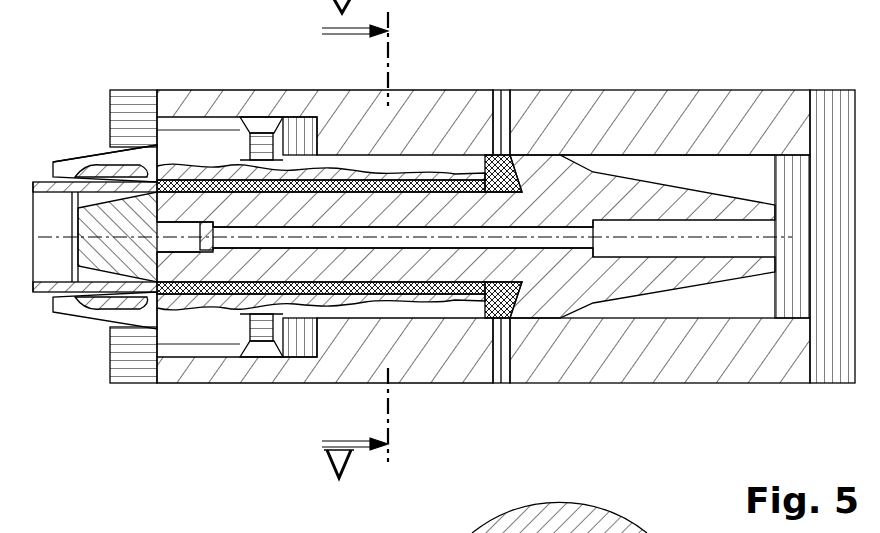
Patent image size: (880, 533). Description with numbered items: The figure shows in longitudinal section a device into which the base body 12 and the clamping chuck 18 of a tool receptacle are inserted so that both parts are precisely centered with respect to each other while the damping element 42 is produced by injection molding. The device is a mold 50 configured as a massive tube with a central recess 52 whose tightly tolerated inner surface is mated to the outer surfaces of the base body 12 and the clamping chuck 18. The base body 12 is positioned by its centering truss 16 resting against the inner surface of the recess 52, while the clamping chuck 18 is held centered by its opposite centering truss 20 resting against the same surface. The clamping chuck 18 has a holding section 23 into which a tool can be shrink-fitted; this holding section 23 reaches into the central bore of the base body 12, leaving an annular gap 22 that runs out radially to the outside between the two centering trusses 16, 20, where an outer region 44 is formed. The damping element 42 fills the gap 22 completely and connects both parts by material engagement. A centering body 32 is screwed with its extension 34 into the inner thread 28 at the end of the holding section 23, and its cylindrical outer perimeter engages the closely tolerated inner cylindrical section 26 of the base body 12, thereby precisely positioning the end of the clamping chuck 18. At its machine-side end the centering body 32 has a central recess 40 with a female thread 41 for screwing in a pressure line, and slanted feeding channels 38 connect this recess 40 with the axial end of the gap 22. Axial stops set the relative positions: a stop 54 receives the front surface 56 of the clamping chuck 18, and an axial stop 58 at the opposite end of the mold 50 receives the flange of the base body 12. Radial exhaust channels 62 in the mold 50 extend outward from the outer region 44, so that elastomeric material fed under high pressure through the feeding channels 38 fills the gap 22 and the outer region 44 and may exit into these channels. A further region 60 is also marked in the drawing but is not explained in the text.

The base body 12 is at (130, 375).
The centering truss 16 is at (438, 150).
The clamping chuck 18 is at (641, 300).
The centering truss 20 is at (556, 166).
The annular gap 22 is at (298, 120).
The holding section 23 is at (427, 265).
The inner cylindrical section 26 is at (78, 165).
The inner thread 28 is at (198, 268).
The centering body 32 is at (90, 312).
The extension 34 is at (191, 175).
The feeding channels 38 is at (101, 158).
The central recess 40 is at (47, 298).
The female thread 41 is at (44, 180).
The damping element 42 is at (262, 352).
The outer region 44 is at (516, 180).
The mold 50 is at (668, 110).
The central recess 52 is at (740, 150).
The stop 54 is at (793, 335).
The front surface 56 is at (784, 300).
The axial stop 58 is at (129, 108).
The annular gap 60 is at (170, 128).
The radial exhaust channels 62 is at (500, 110).